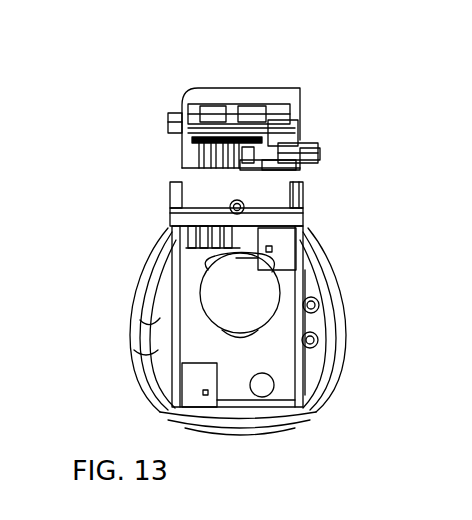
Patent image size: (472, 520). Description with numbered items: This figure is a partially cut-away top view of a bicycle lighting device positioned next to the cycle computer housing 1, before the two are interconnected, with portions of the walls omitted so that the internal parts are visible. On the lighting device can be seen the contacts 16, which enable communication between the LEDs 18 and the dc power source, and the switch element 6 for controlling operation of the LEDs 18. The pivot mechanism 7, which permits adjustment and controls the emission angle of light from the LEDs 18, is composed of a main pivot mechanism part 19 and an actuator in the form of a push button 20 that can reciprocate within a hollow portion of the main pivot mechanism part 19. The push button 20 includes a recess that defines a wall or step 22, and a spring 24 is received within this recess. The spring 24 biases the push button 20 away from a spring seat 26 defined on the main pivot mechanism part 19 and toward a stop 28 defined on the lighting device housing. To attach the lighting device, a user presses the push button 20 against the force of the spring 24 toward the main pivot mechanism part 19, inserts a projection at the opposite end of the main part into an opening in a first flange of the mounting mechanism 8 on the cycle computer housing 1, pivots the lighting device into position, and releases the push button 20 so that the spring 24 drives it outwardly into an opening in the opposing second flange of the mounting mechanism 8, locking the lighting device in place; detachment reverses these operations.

The cycle computer housing 1 is at (130, 322).
The switch element 6 is at (178, 124).
The pivot mechanism 7 is at (320, 155).
The mounting mechanism 8 is at (286, 135).
The contacts 16 is at (240, 170).
The LEDs 18 is at (262, 112).
The main pivot mechanism part 19 is at (178, 155).
The push button 20 is at (306, 140).
The wall or step 22 is at (295, 165).
The spring 24 is at (262, 140).
The spring seat 26 is at (248, 162).
The stop 28 is at (285, 170).